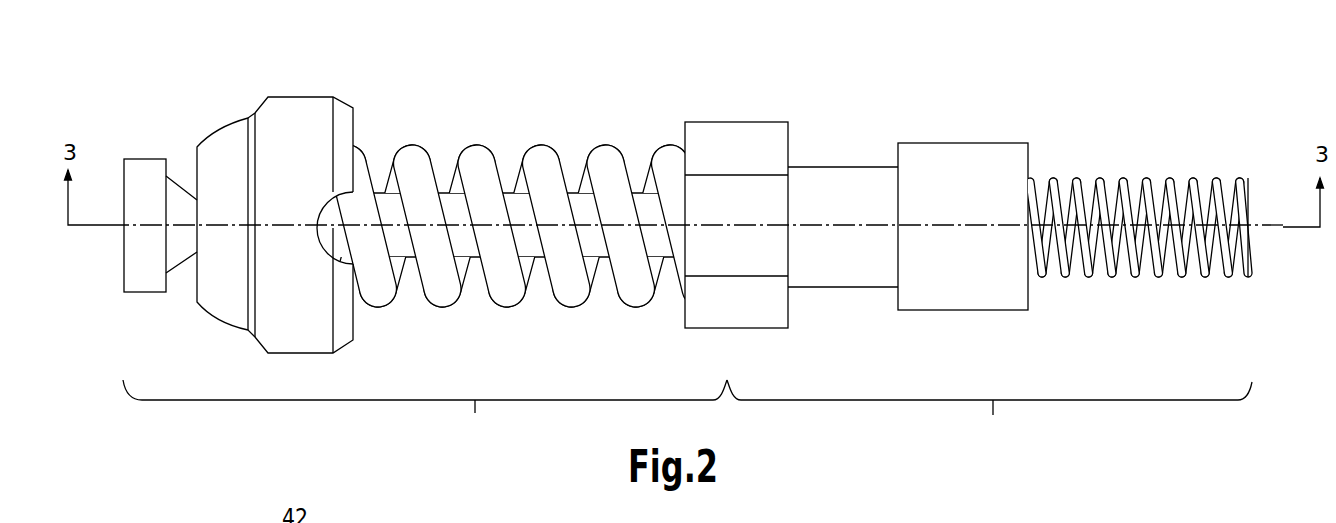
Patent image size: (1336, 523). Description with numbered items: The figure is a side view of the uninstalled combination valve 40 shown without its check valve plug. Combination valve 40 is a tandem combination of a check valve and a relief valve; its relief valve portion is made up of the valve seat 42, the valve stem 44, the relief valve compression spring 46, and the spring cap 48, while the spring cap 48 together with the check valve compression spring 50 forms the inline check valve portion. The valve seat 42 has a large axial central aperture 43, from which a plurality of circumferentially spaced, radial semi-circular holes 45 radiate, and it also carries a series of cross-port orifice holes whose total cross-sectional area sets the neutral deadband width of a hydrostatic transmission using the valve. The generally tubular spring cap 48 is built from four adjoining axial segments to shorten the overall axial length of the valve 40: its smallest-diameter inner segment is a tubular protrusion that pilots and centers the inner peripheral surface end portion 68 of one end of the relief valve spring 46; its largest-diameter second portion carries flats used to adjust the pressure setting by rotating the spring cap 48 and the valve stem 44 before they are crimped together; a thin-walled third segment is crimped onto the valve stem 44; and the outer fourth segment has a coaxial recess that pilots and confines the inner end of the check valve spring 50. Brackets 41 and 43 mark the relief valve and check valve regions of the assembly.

The combination valve 40 is at (613, 88).
The first portion of strut assembly 41 is at (425, 414).
The valve seat 42 is at (305, 118).
The central aperture 43 is at (989, 414).
The valve stem 44 is at (143, 178).
The semi-circular holes 45 is at (325, 233).
The relief valve compression spring 46 is at (475, 160).
The spring cap 48 is at (742, 120).
The check valve compression spring 50 is at (1125, 183).
The inner peripheral surface end portion 68 is at (680, 245).